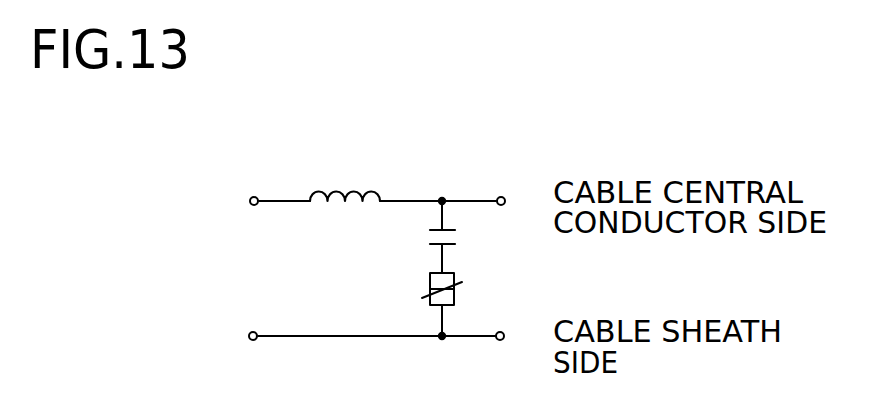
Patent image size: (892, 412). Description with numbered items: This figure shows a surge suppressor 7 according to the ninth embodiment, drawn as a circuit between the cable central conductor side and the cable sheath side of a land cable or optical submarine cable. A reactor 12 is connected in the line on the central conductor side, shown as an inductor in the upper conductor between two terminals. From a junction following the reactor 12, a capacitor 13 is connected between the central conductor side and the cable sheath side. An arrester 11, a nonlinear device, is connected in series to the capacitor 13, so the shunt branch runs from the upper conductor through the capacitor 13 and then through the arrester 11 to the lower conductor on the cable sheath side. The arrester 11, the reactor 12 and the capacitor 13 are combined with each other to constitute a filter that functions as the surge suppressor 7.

The surge suppressor 7 is at (252, 176).
The reactor 12 is at (369, 197).
The capacitor 13 is at (452, 230).
The arrester 11 is at (455, 300).